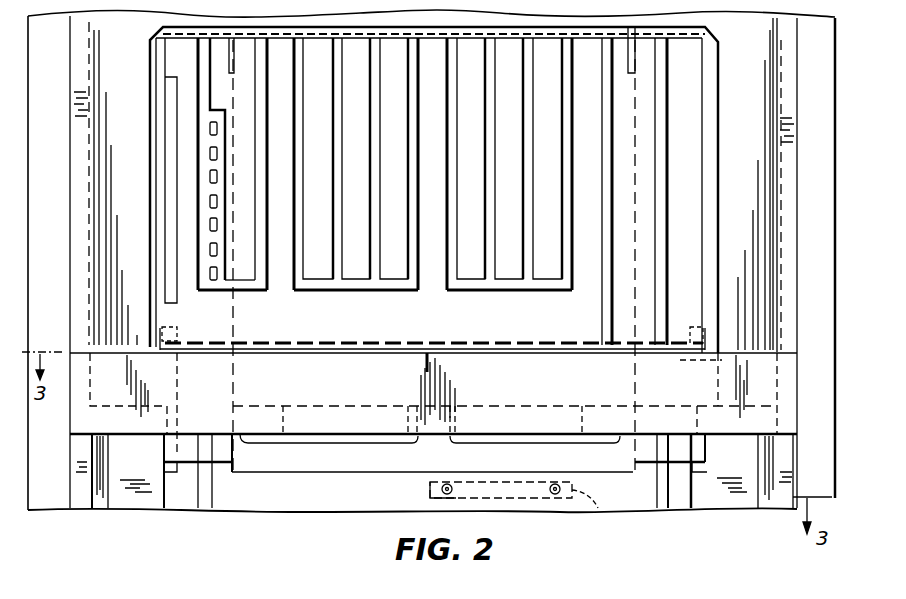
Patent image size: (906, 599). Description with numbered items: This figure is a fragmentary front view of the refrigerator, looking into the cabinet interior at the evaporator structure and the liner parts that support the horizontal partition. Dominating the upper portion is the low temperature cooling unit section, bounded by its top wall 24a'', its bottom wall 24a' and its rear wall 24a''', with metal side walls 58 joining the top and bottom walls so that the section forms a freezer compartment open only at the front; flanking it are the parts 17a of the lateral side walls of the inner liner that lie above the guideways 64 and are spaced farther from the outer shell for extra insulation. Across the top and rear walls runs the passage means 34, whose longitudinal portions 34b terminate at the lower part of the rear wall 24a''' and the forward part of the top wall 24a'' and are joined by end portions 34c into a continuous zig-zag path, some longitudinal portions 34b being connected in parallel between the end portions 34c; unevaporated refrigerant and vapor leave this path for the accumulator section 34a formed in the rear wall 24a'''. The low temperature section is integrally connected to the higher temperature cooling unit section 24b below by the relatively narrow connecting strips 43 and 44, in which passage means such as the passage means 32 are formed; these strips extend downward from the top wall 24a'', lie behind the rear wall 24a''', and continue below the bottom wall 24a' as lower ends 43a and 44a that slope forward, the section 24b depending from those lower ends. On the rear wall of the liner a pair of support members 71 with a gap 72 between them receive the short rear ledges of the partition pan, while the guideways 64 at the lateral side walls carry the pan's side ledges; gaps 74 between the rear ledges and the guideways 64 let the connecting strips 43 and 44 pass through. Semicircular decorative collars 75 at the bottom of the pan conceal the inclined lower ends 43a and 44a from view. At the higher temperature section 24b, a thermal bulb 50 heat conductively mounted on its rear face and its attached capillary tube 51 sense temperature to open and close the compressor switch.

The upper parts of lateral side walls 17a is at (155, 170).
The top wall of low temperature cooling unit section 24a'' is at (430, 19).
The bottom wall of low temperature cooling unit section 24a' is at (434, 329).
The rear wall of low temperature cooling unit section 24a''' is at (432, 332).
The higher temperature cooling unit section 24b is at (657, 500).
The passage means 32 is at (660, 127).
The passage means 34 is at (604, 258).
The accumulator section 34a is at (218, 110).
The longitudinal portions 34b is at (422, 160).
The end portions 34c is at (353, 291).
The connecting strip 43 is at (728, 366).
The lower end of connecting strip 43a is at (700, 470).
The connecting strip 44 is at (185, 393).
The lower end of connecting strip 44a is at (177, 470).
The thermal bulb 50 is at (524, 508).
The capillary tube 51 is at (596, 512).
The metal side walls 58 is at (172, 78).
The guideways 64 is at (110, 421).
The support members 71 is at (304, 405).
The gap 72 is at (437, 415).
The gaps 74 is at (238, 405).
The decorative collars 75 is at (233, 457).